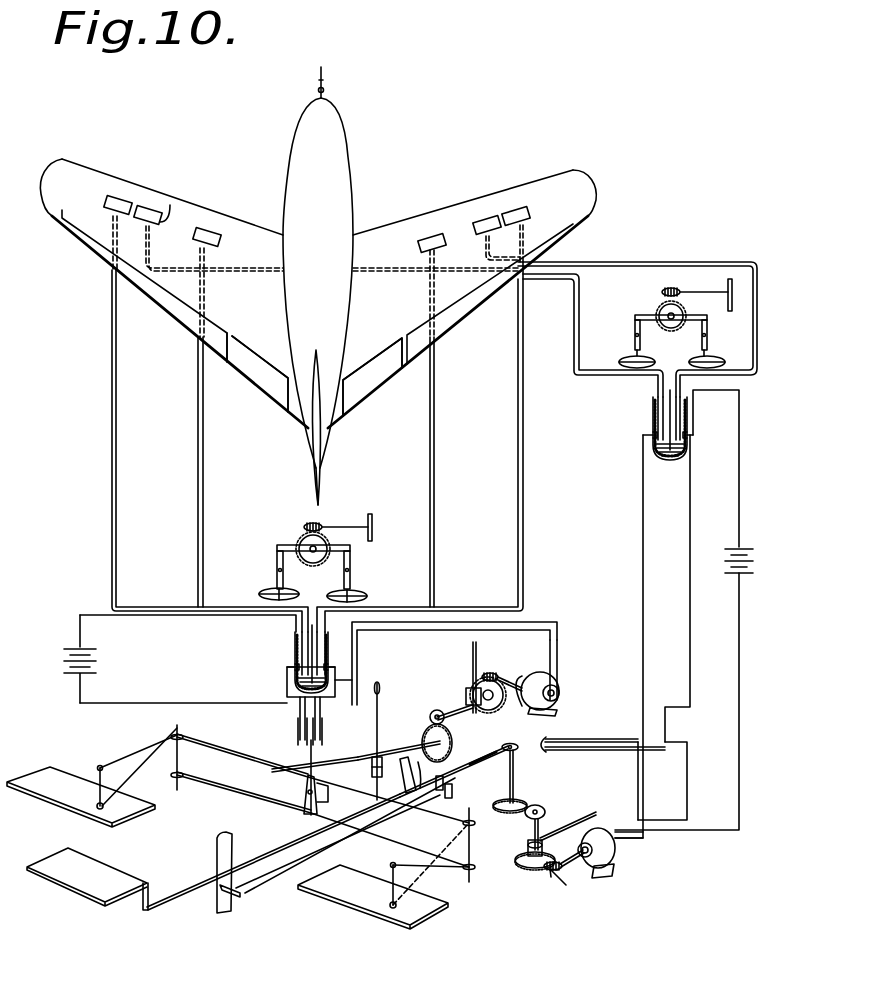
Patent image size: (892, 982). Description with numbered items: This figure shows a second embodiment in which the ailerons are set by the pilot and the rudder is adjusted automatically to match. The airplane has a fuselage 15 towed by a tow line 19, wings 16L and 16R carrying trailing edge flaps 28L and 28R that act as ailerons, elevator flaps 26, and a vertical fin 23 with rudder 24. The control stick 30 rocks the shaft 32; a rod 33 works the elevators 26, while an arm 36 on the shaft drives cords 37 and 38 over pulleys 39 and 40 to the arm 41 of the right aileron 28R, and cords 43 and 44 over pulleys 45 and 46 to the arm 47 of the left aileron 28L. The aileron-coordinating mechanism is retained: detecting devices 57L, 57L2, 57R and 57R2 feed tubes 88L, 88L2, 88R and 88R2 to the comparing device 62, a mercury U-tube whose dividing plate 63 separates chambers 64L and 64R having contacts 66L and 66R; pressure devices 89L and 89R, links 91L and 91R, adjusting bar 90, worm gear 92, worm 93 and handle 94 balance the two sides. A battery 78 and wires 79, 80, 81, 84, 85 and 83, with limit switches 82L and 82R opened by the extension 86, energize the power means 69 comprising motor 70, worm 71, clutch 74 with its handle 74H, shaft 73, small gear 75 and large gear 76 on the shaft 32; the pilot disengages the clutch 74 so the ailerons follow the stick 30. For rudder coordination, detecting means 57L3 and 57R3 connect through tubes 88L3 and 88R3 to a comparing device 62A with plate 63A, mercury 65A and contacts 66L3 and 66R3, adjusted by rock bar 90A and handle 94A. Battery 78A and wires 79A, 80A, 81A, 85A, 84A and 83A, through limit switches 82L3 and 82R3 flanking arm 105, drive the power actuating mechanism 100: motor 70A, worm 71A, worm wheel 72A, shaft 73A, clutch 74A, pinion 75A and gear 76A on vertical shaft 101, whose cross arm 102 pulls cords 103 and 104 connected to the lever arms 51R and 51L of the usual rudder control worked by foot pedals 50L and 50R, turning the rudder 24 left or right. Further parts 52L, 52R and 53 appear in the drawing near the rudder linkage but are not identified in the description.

The tow line 19 is at (324, 80).
The fuselage 15 is at (351, 212).
The vertical fin 23 is at (310, 430).
The rudder 24 is at (312, 484).
The left hand aileron 28L is at (163, 299).
The right hand aileron 28R is at (473, 302).
The elevator flaps 26 is at (260, 379).
The pressure responsive detecting device 57L is at (111, 196).
The left wing 16L is at (144, 203).
The detecting means 57L3 is at (168, 215).
The second detecting device 57L2 is at (214, 233).
The detecting means 57R3 is at (479, 221).
The right wing 16R is at (483, 205).
The pressure responsive detecting device 57R is at (528, 211).
The detecting device 57R2 is at (418, 245).
The tube 88L is at (118, 441).
The tube 88L2 is at (204, 449).
The tube 88R2 is at (435, 453).
The tube 88R is at (517, 483).
The tube 88R3 is at (661, 262).
The tube 88L3 is at (577, 323).
The rock bar 90A is at (647, 318).
The adjusting handle 94A is at (727, 290).
The comparing device 62A is at (644, 419).
The plate 63A is at (673, 420).
The mercury 65A is at (673, 459).
The contact 66L3 is at (650, 435).
The contact 66R3 is at (684, 438).
The wire 79A is at (740, 474).
The battery 78A is at (743, 553).
The wire 80A is at (741, 642).
The wire 81A is at (641, 549).
The wire 84A is at (689, 629).
The wire 85A is at (688, 789).
The wire 83A is at (640, 785).
The normally closed limit switch 82L3 is at (581, 742).
The normally closed limit switch 82R3 is at (573, 752).
The arm 105 is at (544, 741).
The worm gear 92 is at (318, 557).
The adjusting bar 90 is at (293, 545).
The worm 93 is at (318, 524).
The operating handle 94 is at (372, 519).
The link 91L is at (277, 557).
The link 91R is at (352, 568).
The pressure device 89L is at (274, 590).
The pressure device 89R is at (353, 592).
The comparing device 62 is at (286, 658).
The dividing plate 63 is at (306, 637).
The left hand chamber 64L is at (297, 643).
The right hand chamber 64R is at (320, 645).
The contact 66L is at (287, 662).
The contact 66R is at (338, 672).
The wire 81 is at (288, 685).
The wire 84 is at (342, 680).
The wire 79 is at (151, 616).
The battery 78 is at (98, 661).
The wire 80 is at (146, 703).
The wire 85 is at (429, 632).
The wire 83 is at (542, 631).
The power means 69 is at (571, 670).
The electric motor 70 is at (553, 705).
The worm 71 is at (491, 670).
The clutch 74 is at (471, 690).
The handle 74H is at (471, 648).
The shaft 73 is at (437, 710).
The small gear 75 is at (432, 712).
The large gear 76 is at (430, 736).
The control stick 30 is at (380, 701).
The rock shaft 32 is at (371, 767).
The foot pedal 50L is at (372, 756).
The foot pedal 50R is at (401, 762).
The upward extension 86 is at (307, 745).
The arm 36 is at (304, 789).
The limit switch 82R is at (297, 721).
The limit switch 82L is at (321, 731).
The arm 47 is at (98, 768).
The pulley 46 is at (181, 772).
The pulley 45 is at (168, 745).
The cord 43 is at (222, 751).
The cord 44 is at (222, 783).
The lower cord 38 is at (381, 835).
The pulley 39 is at (466, 823).
The pulley 40 is at (474, 867).
The arm 41 is at (390, 866).
The upper cord 37 is at (423, 797).
The lever arm 51R is at (446, 783).
The lever arm 51L is at (451, 795).
The rod 33 is at (179, 901).
The cord 104 is at (486, 767).
The cord 103 is at (482, 757).
The left rudder rod 52L is at (250, 896).
The right rudder rod 52R is at (285, 871).
The rudder horn 53 is at (235, 906).
The cross arm 102 is at (513, 744).
The vertical shaft 101 is at (512, 786).
The large gear 76A is at (517, 798).
The small pinion 75A is at (542, 808).
The shaft 73A is at (530, 827).
The clutch 74A is at (526, 847).
The worm wheel 72A is at (525, 863).
The worm 71A is at (547, 874).
The reversible motor 70A is at (607, 865).
The power actuating mechanism 100 is at (578, 884).